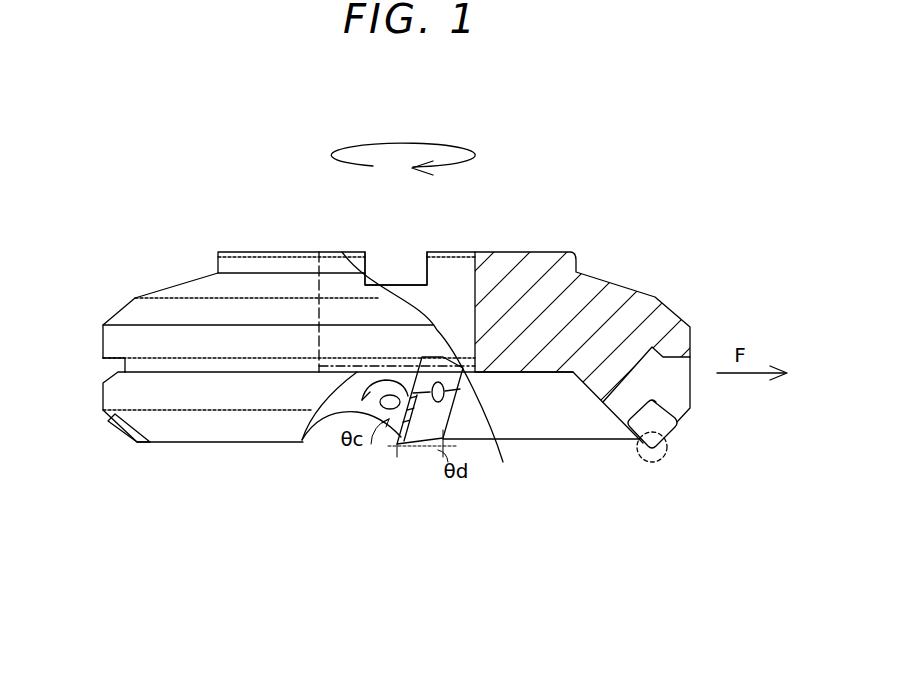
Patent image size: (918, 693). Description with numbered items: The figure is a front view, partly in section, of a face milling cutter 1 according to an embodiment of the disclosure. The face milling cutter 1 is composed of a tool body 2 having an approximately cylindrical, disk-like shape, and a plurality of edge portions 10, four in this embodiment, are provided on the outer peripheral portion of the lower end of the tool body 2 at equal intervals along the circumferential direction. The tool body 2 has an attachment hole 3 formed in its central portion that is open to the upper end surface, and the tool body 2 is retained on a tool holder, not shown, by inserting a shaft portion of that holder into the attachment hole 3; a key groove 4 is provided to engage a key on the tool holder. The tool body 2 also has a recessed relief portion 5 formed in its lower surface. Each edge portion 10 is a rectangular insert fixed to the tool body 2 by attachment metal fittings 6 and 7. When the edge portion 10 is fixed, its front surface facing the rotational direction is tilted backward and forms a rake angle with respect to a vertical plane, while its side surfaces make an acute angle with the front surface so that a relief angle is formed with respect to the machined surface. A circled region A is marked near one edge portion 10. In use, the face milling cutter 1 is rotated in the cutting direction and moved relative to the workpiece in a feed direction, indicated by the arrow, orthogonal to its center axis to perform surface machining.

The face milling cutter 1 is at (237, 154).
The tool body 2 is at (595, 282).
The attachment hole 3 is at (475, 298).
The key groove 4 is at (425, 275).
The recessed relief portion 5 is at (575, 428).
The attachment metal fitting 6 is at (372, 392).
The attachment metal fitting 7 is at (448, 384).
The edge portion 10 is at (138, 447).
The region A is at (640, 473).